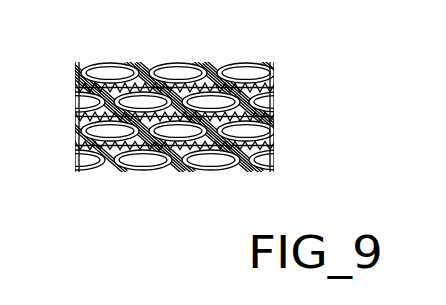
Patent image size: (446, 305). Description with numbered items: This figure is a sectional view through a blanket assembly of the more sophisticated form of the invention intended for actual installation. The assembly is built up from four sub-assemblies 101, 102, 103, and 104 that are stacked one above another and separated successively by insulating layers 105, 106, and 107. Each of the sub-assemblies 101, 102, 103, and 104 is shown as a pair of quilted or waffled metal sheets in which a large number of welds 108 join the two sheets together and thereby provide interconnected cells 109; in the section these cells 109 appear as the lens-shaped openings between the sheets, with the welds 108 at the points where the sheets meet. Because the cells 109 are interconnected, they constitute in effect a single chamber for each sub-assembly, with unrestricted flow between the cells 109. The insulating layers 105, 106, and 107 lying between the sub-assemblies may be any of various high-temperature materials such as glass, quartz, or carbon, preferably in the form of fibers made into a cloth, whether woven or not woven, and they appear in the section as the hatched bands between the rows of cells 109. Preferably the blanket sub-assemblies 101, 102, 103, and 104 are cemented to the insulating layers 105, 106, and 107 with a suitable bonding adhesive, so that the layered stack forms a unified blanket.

The sub-assembly 101 is at (194, 130).
The sub-assembly 102 is at (274, 131).
The sub-assembly 103 is at (275, 100).
The sub-assembly 104 is at (215, 70).
The insulating layer 105 is at (274, 148).
The insulating layer 106 is at (275, 116).
The insulating layer 107 is at (275, 84).
The welds 108 is at (144, 67).
The cells 109 is at (213, 188).